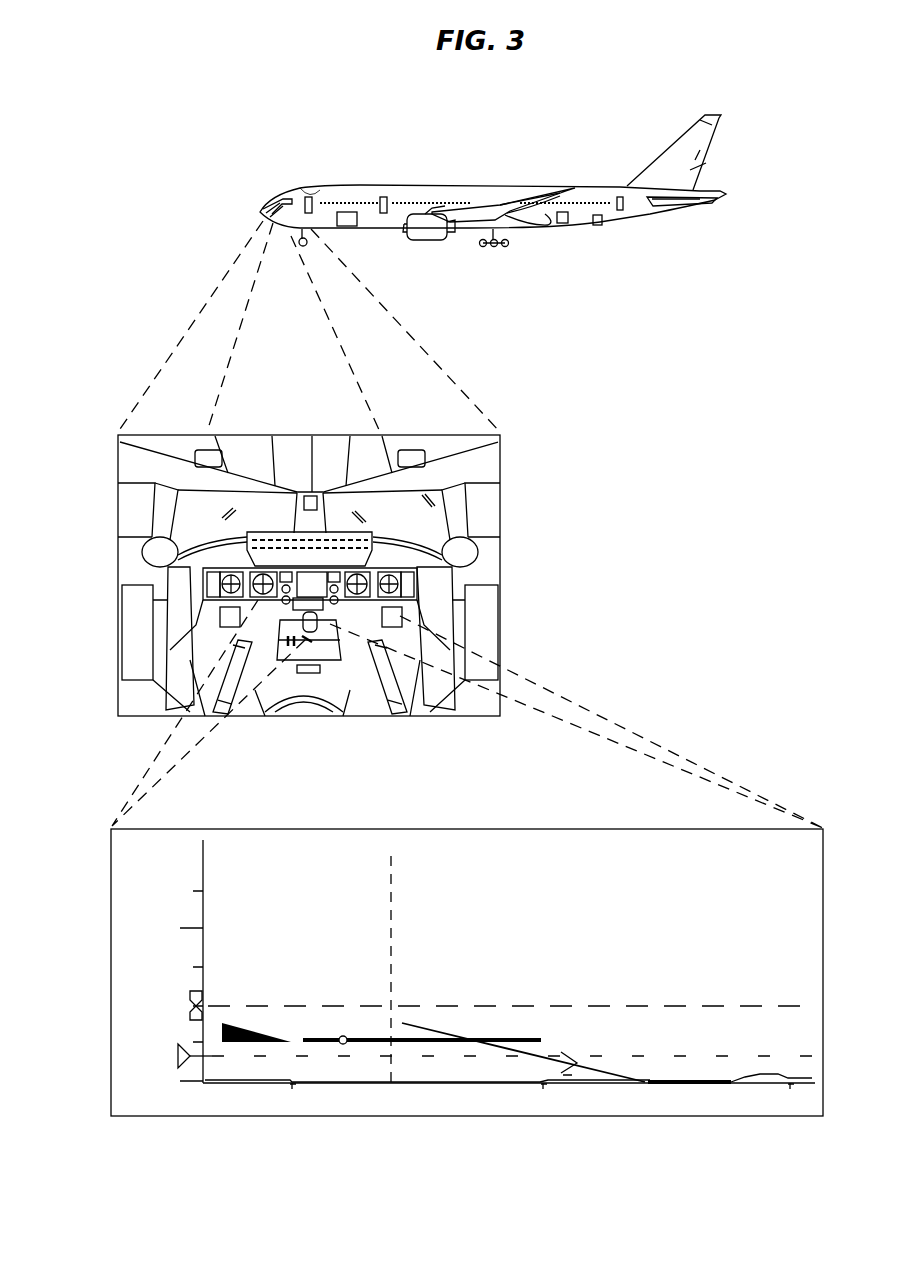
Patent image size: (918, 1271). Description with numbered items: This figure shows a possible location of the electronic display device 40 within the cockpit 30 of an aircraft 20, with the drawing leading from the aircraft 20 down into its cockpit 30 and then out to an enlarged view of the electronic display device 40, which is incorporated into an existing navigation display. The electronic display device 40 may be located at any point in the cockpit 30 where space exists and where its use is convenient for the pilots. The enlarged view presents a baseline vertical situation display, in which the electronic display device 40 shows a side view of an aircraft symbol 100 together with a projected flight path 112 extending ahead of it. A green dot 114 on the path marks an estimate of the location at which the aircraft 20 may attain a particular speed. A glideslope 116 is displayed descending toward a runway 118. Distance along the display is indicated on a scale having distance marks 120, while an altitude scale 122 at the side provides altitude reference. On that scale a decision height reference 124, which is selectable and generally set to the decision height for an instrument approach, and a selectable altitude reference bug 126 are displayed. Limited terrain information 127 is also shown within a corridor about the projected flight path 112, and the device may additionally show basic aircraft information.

The aircraft 20 is at (566, 160).
The cockpit 30 is at (524, 444).
The electronic display device 40 is at (766, 781).
The aircraft symbol 100 is at (253, 1028).
The projected flight path 112 is at (528, 1037).
The green dot 114 is at (347, 1038).
The glideslope 116 is at (447, 1033).
The runway 118 is at (693, 1080).
The distance marks 120 is at (293, 1088).
The altitude scale 122 is at (136, 966).
The decision height reference 124 is at (178, 1056).
The altitude reference bug 126 is at (190, 1020).
The terrain information 127 is at (770, 1076).